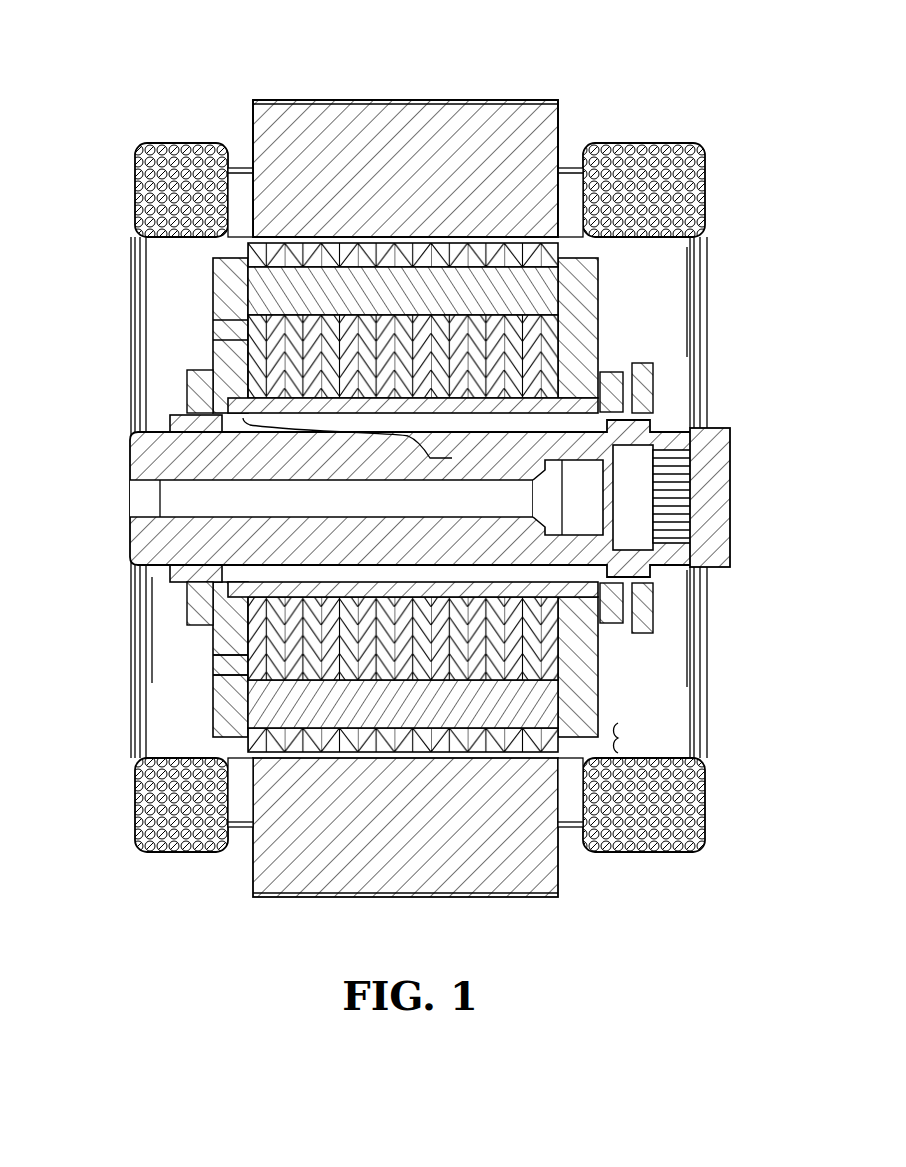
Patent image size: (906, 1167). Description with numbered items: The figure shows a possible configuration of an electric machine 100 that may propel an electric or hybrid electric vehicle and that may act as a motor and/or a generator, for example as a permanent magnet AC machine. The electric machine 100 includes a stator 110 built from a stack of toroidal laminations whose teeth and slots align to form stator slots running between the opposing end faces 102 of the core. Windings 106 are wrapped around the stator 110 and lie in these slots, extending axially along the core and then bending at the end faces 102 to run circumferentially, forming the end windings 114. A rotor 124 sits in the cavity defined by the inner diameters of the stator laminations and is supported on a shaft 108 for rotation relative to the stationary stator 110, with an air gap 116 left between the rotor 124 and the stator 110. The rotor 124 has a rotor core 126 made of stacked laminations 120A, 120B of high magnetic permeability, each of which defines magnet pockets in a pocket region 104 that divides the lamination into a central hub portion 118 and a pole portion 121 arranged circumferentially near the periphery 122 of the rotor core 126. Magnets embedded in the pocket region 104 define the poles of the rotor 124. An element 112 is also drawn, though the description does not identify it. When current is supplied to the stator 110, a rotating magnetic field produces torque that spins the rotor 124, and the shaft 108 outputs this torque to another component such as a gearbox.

The electric machine 100 is at (213, 60).
The end faces 102 is at (252, 133).
The pocket region 104 is at (508, 292).
The windings 106 is at (396, 130).
The shaft 108 is at (717, 432).
The stator 110 is at (438, 97).
The end plate 112 is at (245, 830).
The end windings 114 is at (700, 152).
The air gap 116 is at (560, 753).
The central hub portion 118 is at (600, 638).
The lamination 120A is at (233, 618).
The lamination 120B is at (263, 633).
The pole portion 121 is at (622, 740).
The periphery 122 is at (262, 752).
The rotor 124 is at (371, 497).
The rotor core 126 is at (373, 444).